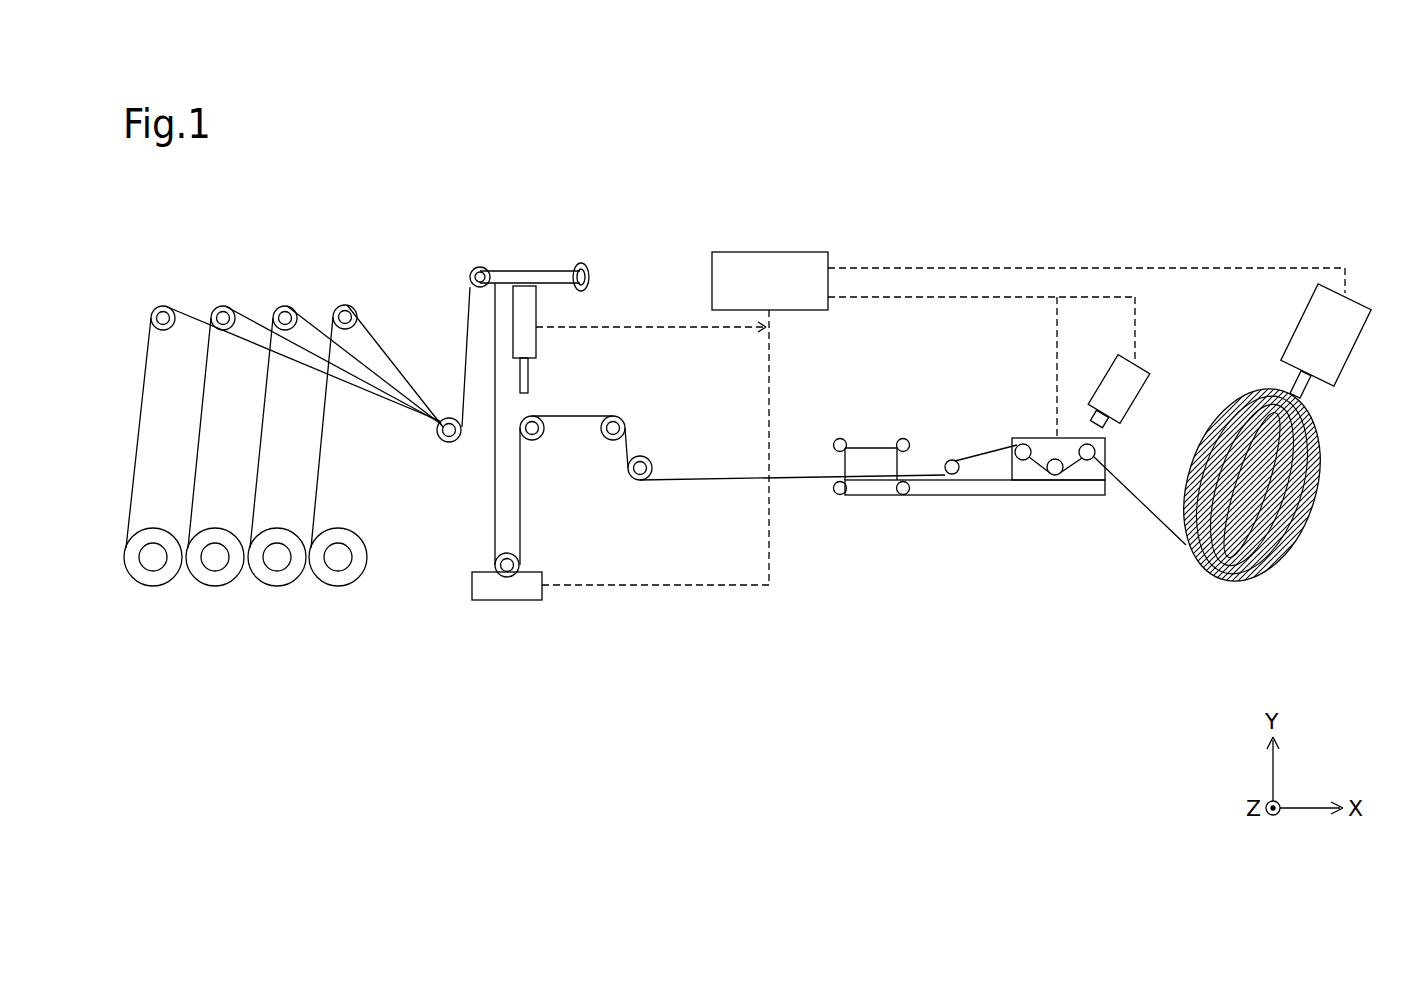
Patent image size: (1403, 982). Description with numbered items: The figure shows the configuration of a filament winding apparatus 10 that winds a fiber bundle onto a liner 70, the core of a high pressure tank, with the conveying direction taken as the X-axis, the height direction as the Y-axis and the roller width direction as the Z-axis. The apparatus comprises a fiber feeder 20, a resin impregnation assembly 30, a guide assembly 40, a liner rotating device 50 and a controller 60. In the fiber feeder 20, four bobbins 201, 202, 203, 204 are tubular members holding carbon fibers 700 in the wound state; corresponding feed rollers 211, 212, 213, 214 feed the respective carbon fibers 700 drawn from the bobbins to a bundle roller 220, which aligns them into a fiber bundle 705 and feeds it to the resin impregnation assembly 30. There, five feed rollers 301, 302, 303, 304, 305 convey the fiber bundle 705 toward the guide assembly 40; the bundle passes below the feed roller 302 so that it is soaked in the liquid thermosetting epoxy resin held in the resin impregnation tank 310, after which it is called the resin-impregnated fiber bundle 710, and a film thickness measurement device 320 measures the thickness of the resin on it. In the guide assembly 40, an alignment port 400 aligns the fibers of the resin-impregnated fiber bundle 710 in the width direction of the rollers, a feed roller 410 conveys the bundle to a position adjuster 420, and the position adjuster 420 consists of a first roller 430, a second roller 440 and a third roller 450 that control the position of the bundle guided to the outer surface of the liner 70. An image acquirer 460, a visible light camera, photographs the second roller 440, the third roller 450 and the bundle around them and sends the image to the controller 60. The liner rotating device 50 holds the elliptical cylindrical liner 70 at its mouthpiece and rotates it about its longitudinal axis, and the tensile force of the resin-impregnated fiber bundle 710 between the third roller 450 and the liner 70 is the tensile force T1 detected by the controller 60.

The filament winding apparatus 10 is at (1073, 190).
The fiber feeder 20 is at (468, 657).
The resin impregnation assembly 30 is at (657, 657).
The guide assembly 40 is at (1147, 657).
The liner rotating device 50 is at (1355, 346).
The controller 60 is at (812, 252).
The liner 70 is at (1210, 576).
The bobbin 201 is at (153, 587).
The bobbin 202 is at (215, 587).
The bobbin 203 is at (277, 587).
The bobbin 204 is at (338, 587).
The feed roller 211 is at (161, 304).
The feed roller 212 is at (221, 304).
The feed roller 213 is at (283, 304).
The feed roller 214 is at (343, 303).
The bundle roller 220 is at (450, 444).
The feed roller 301 is at (477, 266).
The feed roller 302 is at (512, 554).
The feed roller 303 is at (535, 442).
The feed roller 304 is at (610, 442).
The feed roller 305 is at (645, 455).
The resin impregnation tank 310 is at (543, 578).
The film thickness measurement device 320 is at (537, 306).
The alignment port 400 is at (872, 445).
The feed roller 410 is at (952, 458).
The position adjuster 420 is at (1021, 436).
The first roller 430 is at (1023, 462).
The second roller 440 is at (1055, 477).
The third roller 450 is at (1088, 462).
The image acquirer 460 is at (1140, 402).
The carbon fiber 700 is at (140, 424).
The fiber bundle 705 is at (494, 527).
The resin-impregnated fiber bundle 710 is at (592, 412).
The tensile force T1 is at (1128, 472).